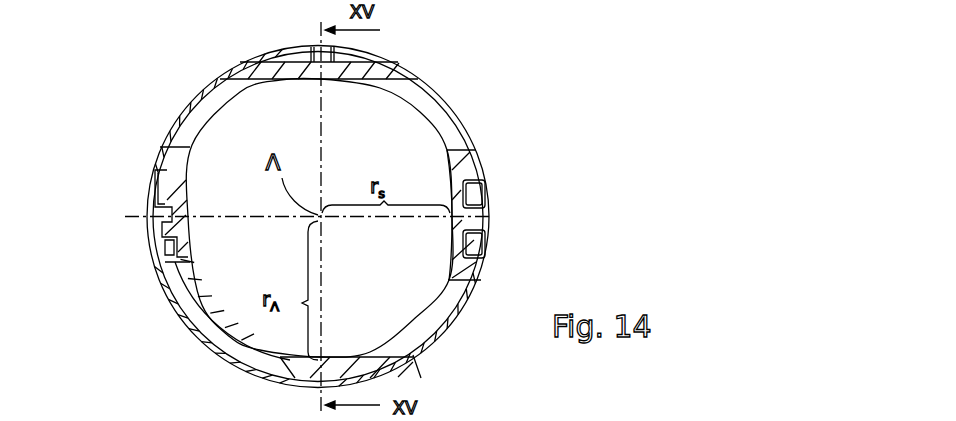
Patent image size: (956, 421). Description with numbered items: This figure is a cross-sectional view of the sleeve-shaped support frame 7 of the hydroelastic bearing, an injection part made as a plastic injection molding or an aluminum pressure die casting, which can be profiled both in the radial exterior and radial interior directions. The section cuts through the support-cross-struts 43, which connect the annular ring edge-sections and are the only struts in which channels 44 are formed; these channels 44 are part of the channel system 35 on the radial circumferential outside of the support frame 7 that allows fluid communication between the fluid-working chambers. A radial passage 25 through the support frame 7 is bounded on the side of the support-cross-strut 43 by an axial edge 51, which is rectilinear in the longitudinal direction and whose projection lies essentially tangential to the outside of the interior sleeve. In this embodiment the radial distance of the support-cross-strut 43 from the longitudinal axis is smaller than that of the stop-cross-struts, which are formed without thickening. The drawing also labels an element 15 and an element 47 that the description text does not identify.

The support frame 7 is at (157, 116).
The upper spacer block 15 is at (390, 63).
The radial passage 25 is at (440, 97).
The axial edge 51 is at (478, 148).
The support-cross-strut 43 is at (157, 157).
The upper pocket 47 is at (488, 192).
The channels 44 is at (490, 243).
The channel system 35 is at (490, 222).